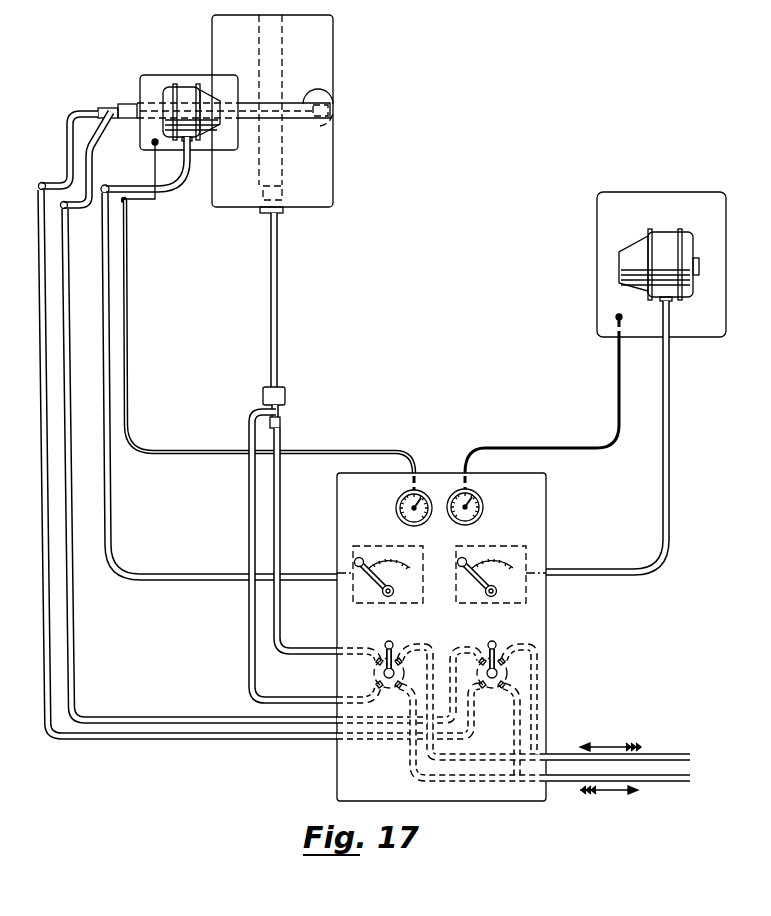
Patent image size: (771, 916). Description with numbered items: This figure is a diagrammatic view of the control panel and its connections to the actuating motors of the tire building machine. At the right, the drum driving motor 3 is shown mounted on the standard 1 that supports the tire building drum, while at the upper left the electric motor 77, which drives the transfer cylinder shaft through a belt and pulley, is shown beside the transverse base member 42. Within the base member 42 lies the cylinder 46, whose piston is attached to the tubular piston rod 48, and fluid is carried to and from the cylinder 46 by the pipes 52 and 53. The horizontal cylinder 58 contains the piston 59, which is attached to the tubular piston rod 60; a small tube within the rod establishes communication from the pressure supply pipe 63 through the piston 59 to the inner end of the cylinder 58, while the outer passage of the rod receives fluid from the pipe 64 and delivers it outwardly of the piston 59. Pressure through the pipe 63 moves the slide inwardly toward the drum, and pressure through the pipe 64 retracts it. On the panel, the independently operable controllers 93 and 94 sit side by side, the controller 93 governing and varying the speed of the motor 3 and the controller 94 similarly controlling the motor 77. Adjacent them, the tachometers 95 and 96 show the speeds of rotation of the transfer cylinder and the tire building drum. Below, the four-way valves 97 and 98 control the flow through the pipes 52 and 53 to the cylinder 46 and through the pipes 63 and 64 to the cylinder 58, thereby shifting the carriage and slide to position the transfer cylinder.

The standard 1 is at (715, 286).
The driving motor 3 is at (666, 235).
The transverse base member 42 is at (317, 73).
The cylinder 46 is at (282, 178).
The tubular piston rod 48 is at (283, 333).
The pipe 52 is at (278, 557).
The pipe 53 is at (250, 639).
The cylinder 58 is at (333, 100).
The piston 59 is at (342, 131).
The tubular piston rod 60 is at (134, 103).
The pressure supply pipe 63 is at (88, 112).
The pipe 64 is at (108, 128).
The electric motor 77 is at (183, 88).
The controller 93 is at (492, 565).
The controller 94 is at (380, 561).
The tachometer 95 is at (483, 498).
The tachometer 96 is at (397, 494).
The four-way valve 97 is at (393, 651).
The four-way valve 98 is at (497, 648).